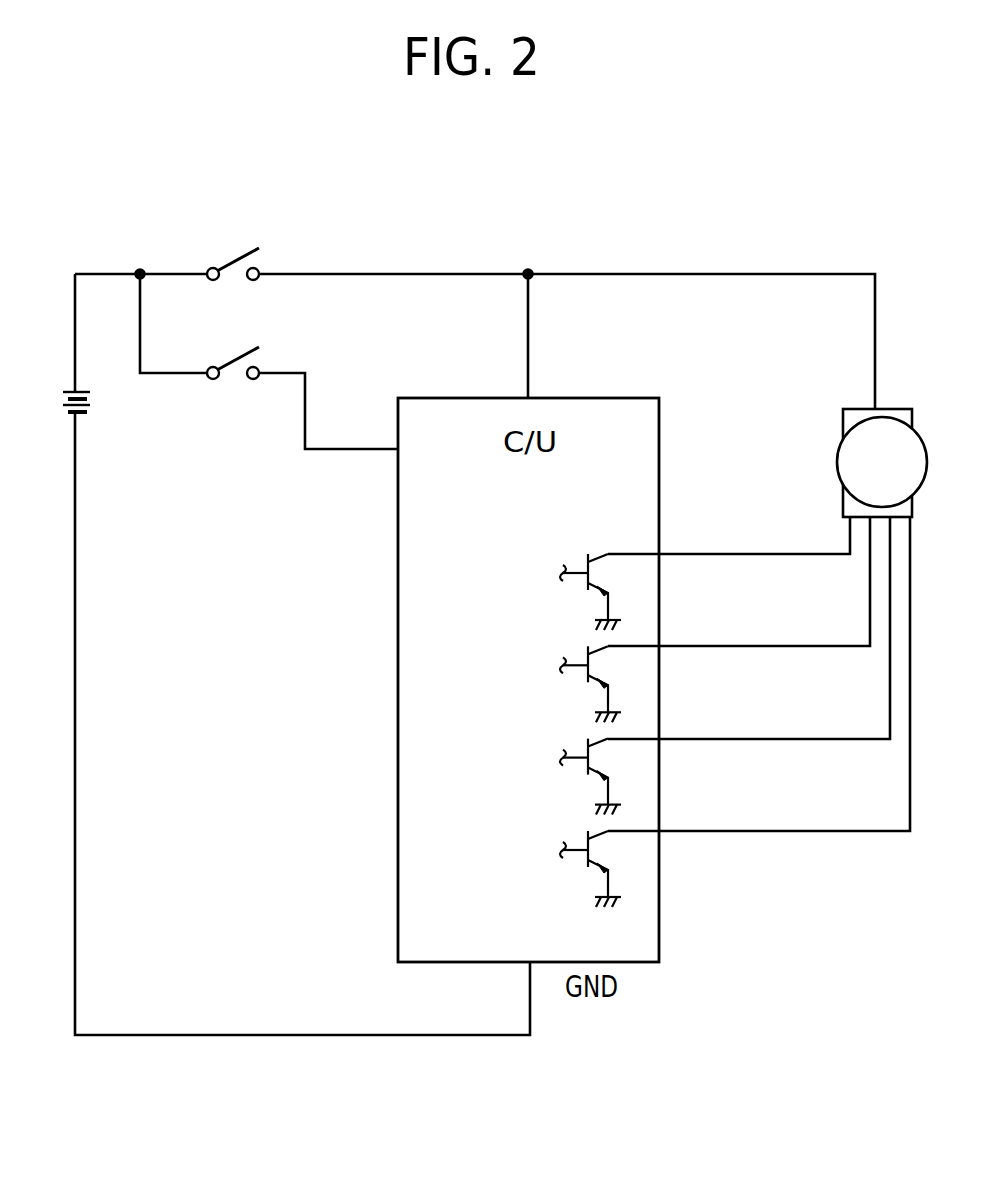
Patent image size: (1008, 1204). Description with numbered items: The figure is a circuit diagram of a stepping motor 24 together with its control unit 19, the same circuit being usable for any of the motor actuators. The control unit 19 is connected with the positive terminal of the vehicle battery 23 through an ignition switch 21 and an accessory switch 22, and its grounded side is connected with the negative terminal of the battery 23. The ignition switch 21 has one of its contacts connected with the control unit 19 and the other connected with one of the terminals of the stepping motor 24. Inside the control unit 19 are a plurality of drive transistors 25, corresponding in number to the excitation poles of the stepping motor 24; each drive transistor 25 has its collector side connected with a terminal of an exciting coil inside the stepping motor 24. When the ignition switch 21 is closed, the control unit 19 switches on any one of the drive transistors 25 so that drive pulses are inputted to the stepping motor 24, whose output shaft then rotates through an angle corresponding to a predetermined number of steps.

The control unit 19 is at (451, 397).
The ignition switch 21 is at (230, 264).
The accessory switch 22 is at (230, 361).
The vehicle battery 23 is at (97, 398).
The stepping motor 24 is at (837, 462).
The drive transistors 25 is at (586, 552).